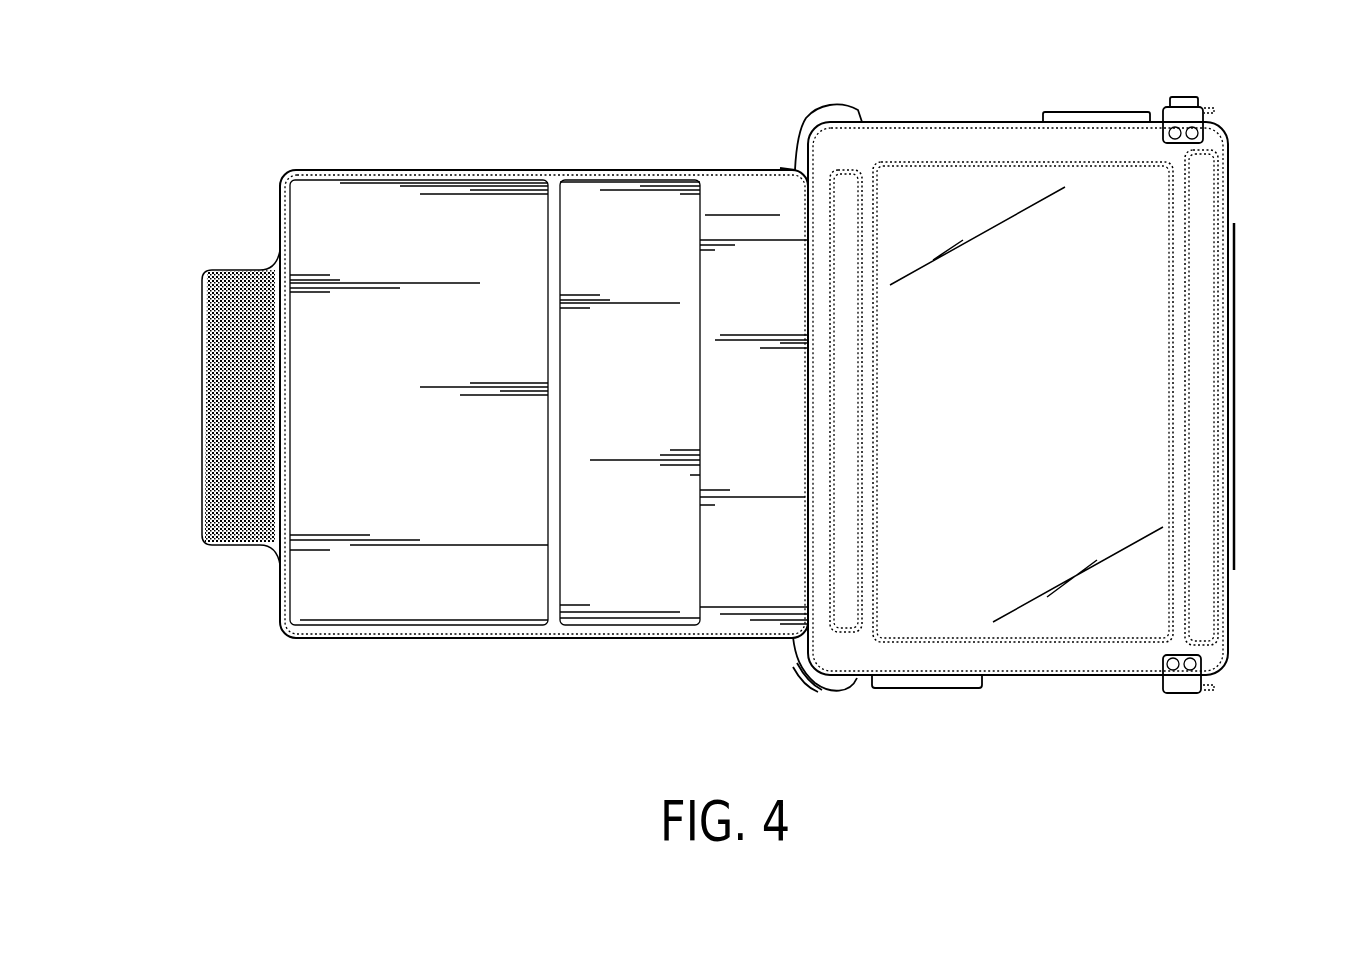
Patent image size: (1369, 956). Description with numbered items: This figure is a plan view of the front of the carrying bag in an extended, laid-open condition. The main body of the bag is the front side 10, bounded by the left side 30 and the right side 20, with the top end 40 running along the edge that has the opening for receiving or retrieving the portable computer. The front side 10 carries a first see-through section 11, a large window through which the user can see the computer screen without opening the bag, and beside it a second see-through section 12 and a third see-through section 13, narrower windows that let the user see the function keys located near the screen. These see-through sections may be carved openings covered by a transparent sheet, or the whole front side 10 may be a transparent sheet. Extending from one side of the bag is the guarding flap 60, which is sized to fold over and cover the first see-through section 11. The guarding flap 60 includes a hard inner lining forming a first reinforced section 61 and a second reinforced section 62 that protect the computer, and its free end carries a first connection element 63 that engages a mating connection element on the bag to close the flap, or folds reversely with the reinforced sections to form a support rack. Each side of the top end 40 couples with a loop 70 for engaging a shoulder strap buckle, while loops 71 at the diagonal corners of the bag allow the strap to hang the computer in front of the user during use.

The front side 10 is at (1040, 655).
The first see-through section 11 is at (1040, 409).
The second see-through section 12 is at (1200, 322).
The third see-through section 13 is at (845, 262).
The right side 20 is at (920, 680).
The left side 30 is at (1105, 118).
The top end 40 is at (1235, 437).
The guarding flap 60 is at (549, 640).
The first reinforced section 61 is at (618, 232).
The second reinforced section 62 is at (372, 240).
The first connection element 63 is at (228, 397).
The loop 70 is at (1213, 107).
The loop 71 is at (1205, 100).